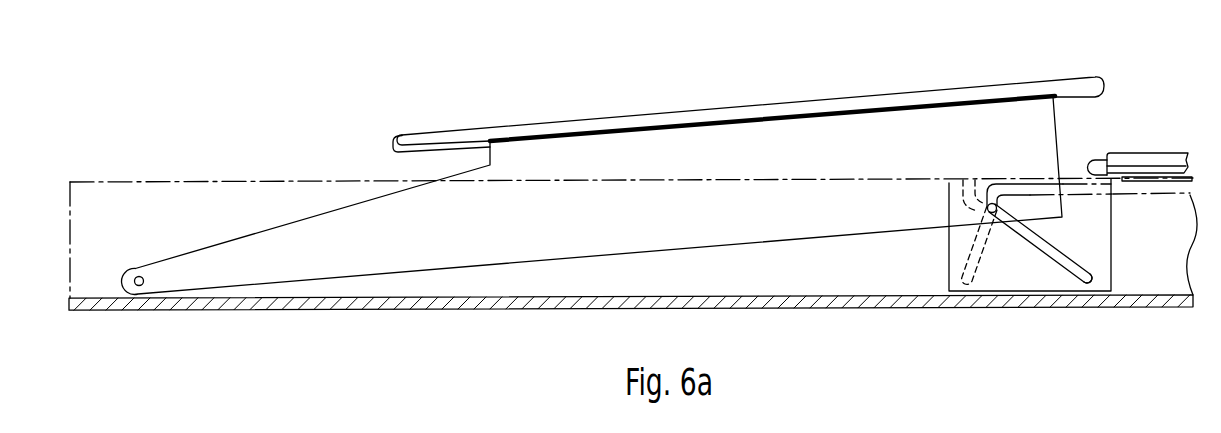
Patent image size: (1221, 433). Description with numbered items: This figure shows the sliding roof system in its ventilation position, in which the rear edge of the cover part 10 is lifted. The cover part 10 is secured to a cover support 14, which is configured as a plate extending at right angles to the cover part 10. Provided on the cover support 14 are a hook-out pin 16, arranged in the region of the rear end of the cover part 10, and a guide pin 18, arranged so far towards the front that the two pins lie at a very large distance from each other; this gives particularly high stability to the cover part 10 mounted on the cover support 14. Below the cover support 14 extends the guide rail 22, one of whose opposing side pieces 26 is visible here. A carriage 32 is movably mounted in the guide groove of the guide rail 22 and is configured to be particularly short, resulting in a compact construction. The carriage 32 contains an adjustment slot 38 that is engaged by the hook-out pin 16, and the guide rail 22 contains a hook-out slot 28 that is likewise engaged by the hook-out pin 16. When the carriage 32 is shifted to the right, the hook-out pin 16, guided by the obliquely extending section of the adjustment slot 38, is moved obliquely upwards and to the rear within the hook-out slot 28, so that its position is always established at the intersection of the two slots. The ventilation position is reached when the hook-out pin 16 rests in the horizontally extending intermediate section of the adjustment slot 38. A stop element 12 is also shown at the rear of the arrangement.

The cover part 10 is at (945, 97).
The stop element 12 is at (1160, 160).
The cover support 14 is at (842, 135).
The hook-out pin 16 is at (993, 212).
The guide pin 18 is at (140, 286).
The guide rail 22 is at (427, 305).
The side piece 26 is at (890, 270).
The hook-out slot 28 is at (968, 283).
The carriage 32 is at (1032, 275).
The adjustment slot 38 is at (1086, 283).